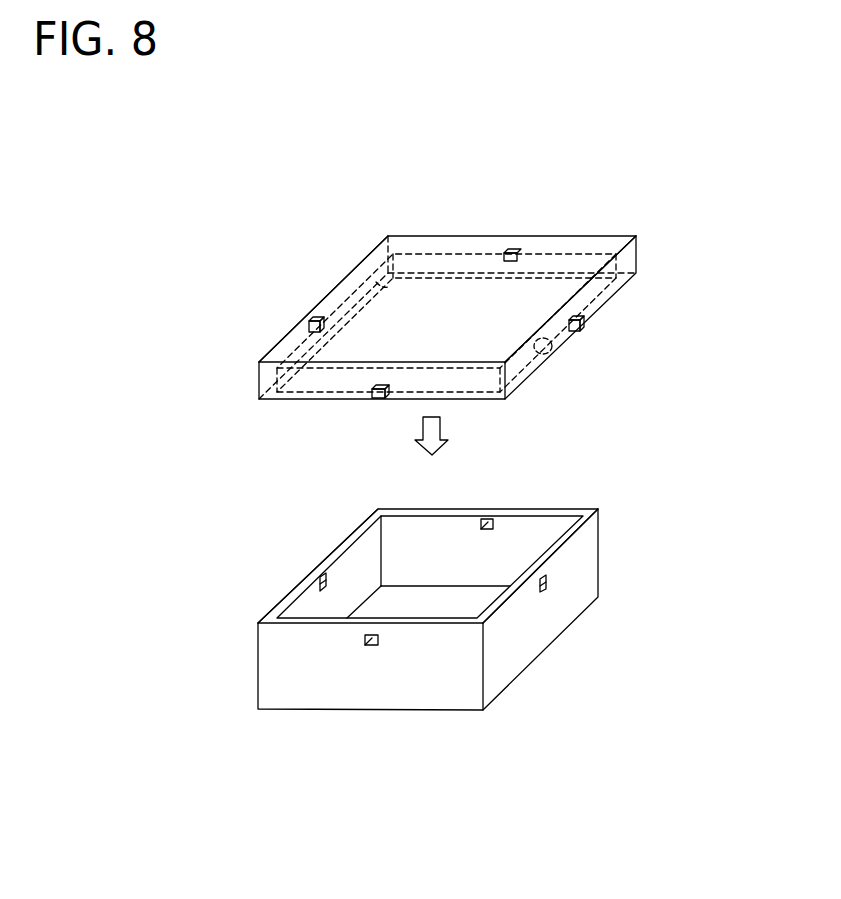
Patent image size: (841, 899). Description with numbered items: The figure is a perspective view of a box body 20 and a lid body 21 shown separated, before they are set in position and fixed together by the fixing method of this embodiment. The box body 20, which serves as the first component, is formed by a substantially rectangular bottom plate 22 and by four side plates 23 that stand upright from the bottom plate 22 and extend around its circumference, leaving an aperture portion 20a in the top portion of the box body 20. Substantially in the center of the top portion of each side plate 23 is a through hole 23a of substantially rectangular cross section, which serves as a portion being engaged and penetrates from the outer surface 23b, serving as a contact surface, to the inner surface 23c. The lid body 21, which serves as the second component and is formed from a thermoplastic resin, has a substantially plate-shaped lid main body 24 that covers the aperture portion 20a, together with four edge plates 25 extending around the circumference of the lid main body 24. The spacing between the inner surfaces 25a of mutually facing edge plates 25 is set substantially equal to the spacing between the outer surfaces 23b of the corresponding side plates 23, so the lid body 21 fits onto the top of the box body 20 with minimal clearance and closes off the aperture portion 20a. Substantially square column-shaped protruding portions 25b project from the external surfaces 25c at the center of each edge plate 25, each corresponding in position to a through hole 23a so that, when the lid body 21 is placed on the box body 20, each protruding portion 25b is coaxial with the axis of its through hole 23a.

The box body 20 is at (428, 612).
The aperture portion 20a is at (355, 572).
The lid body 21 is at (460, 312).
The bottom plate 22 is at (448, 600).
The side plate 23 is at (428, 607).
The through hole 23a is at (488, 518).
The outer surface 23b is at (298, 585).
The inner surface 23c is at (340, 568).
The lid main body 24 is at (552, 288).
The edge plate 25 is at (442, 248).
The inner surface 25a is at (382, 288).
The protruding portion 25b is at (511, 250).
The external surface 25c is at (290, 333).